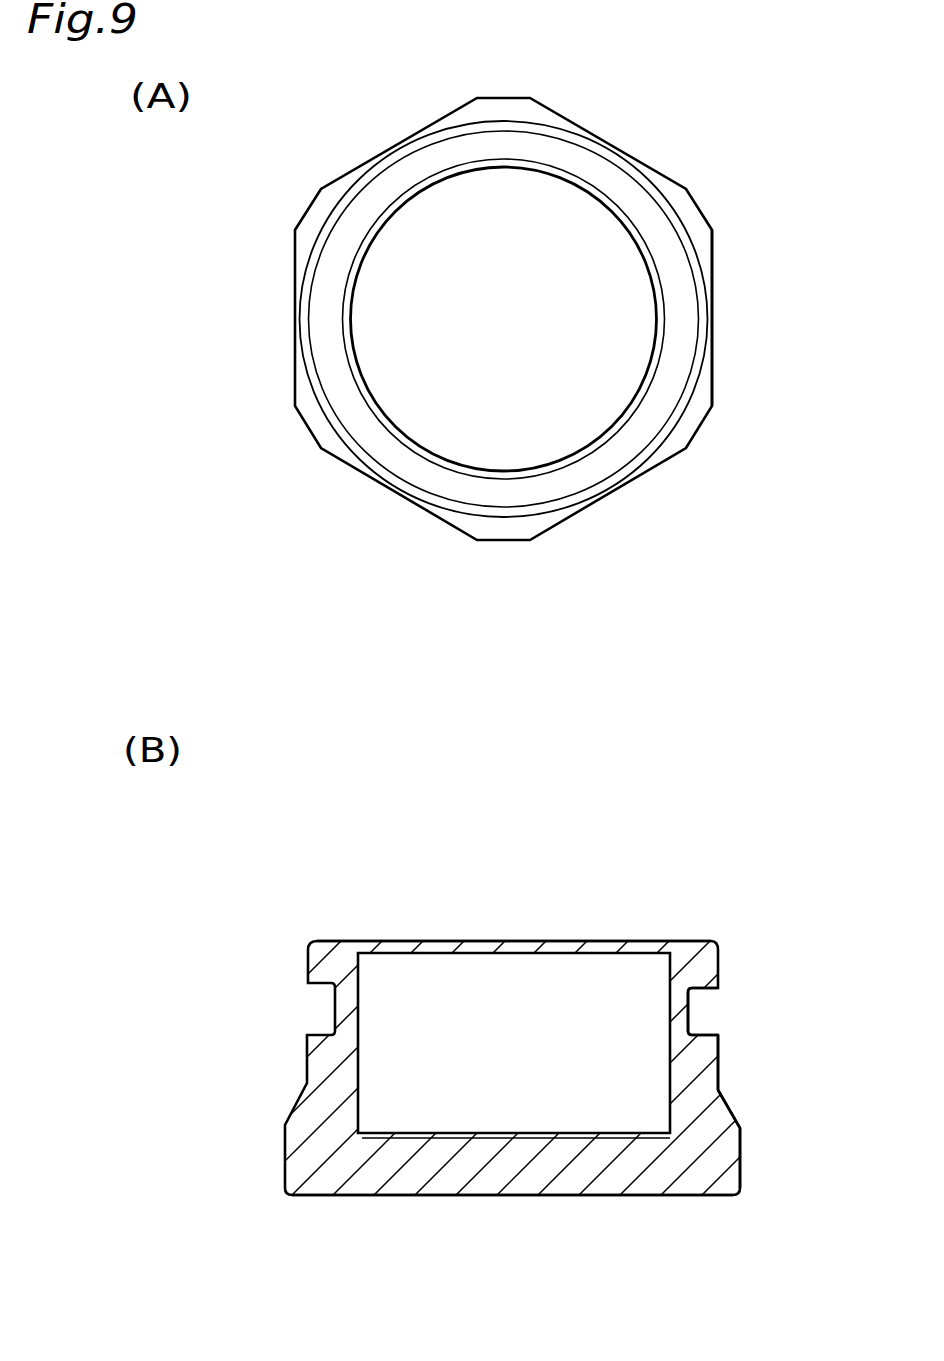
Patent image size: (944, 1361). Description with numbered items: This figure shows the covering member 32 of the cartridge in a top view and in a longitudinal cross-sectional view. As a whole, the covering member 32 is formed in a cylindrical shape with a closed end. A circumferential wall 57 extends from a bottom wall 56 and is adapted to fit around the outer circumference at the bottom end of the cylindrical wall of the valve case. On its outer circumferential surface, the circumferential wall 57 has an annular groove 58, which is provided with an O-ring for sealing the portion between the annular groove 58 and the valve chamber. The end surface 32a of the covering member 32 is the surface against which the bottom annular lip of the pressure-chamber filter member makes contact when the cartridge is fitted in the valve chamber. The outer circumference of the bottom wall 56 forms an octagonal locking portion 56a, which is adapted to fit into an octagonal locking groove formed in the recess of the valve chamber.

The covering member 32 is at (687, 175).
The end surface 32a is at (590, 473).
The bottom wall 56 is at (617, 333).
The octagonal locking portion 56a is at (715, 237).
The circumferential wall 57 is at (657, 452).
The annular groove 58 is at (705, 1002).